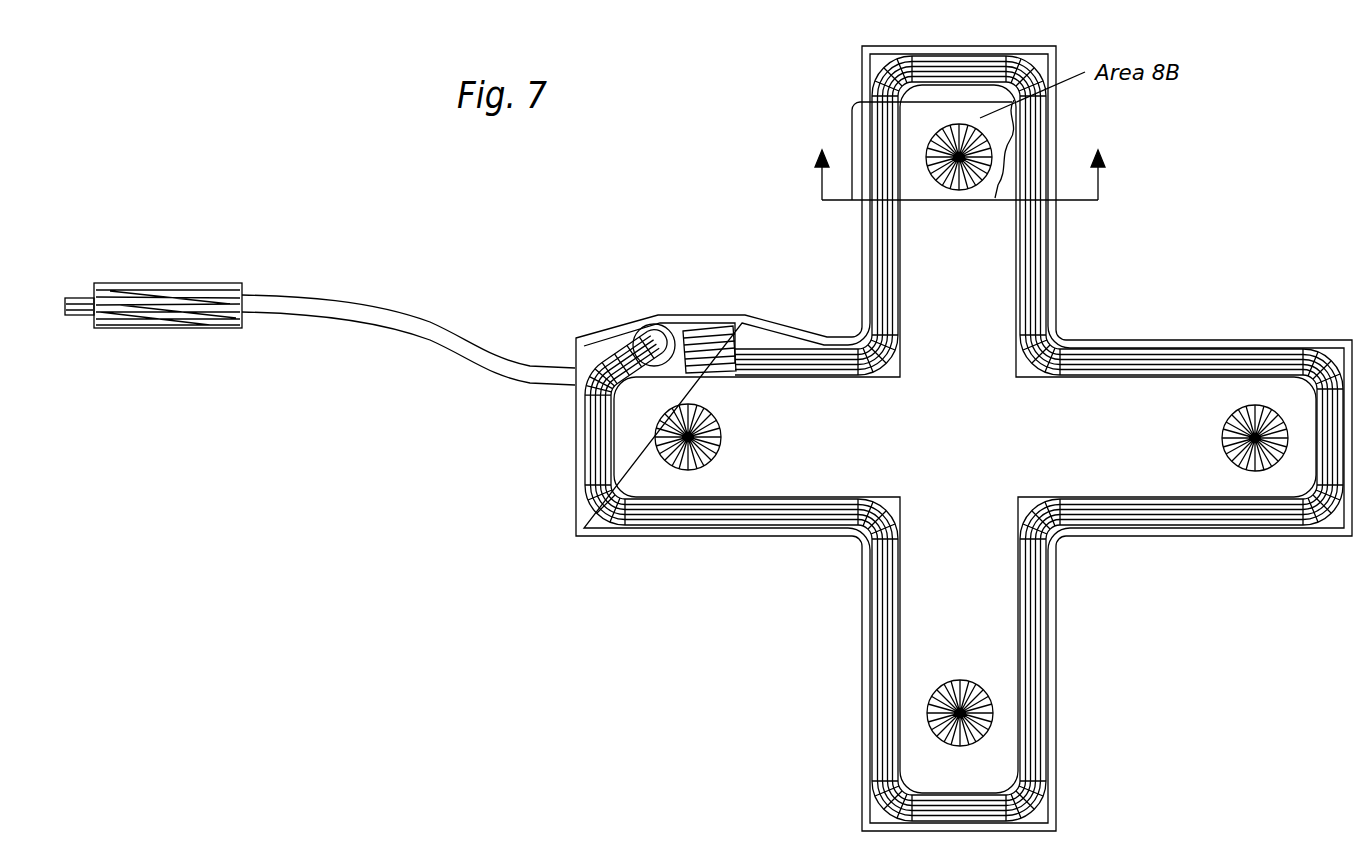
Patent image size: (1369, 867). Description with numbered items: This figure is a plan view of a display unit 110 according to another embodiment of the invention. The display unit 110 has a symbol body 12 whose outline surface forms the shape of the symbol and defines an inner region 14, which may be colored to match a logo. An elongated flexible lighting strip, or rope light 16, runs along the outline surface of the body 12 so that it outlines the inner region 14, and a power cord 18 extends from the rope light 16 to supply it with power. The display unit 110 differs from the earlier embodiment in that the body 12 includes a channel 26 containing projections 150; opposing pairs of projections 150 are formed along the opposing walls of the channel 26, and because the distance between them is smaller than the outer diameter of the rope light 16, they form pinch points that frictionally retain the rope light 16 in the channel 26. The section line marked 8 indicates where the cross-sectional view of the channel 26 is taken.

The display unit 110 is at (528, 545).
The symbol body 12 is at (815, 470).
The inner region 14 is at (963, 423).
The elongated flexible lighting strip 16 is at (1138, 365).
The projections 150 is at (672, 522).
The power cord 18 is at (390, 317).
The channel 26 is at (590, 352).
The section line 8- 8 is at (962, 160).